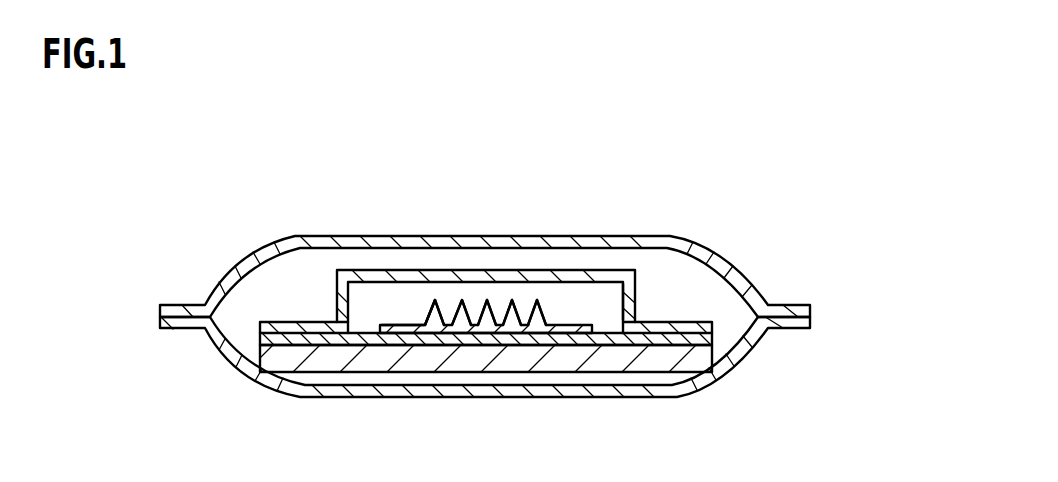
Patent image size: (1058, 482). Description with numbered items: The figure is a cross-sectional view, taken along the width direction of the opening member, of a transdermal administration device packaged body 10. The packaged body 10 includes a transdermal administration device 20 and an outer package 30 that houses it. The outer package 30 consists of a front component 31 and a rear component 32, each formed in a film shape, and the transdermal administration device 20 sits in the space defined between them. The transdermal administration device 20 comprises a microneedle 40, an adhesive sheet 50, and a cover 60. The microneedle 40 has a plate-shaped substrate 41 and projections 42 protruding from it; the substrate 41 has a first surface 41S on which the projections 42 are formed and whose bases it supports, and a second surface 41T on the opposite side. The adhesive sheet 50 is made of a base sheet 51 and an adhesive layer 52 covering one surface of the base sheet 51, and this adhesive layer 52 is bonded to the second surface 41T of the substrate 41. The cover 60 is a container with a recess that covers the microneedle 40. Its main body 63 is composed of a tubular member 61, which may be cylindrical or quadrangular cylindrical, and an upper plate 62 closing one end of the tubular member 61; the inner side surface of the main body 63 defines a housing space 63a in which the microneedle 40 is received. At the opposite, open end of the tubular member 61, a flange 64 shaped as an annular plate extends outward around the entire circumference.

The transdermal administration device packaged body 10 is at (207, 169).
The transdermal administration device 20 is at (253, 292).
The outer package 30 is at (852, 258).
The front component 31 is at (748, 276).
The rear component 32 is at (748, 356).
The microneedle 40 is at (567, 187).
The substrate 41 is at (568, 323).
The first surface 41S is at (396, 327).
The second surface 41T is at (428, 328).
The projection 42 is at (520, 298).
The adhesive sheet 50 is at (140, 350).
The base sheet 51 is at (260, 362).
The adhesive layer 52 is at (260, 340).
The cover 60 is at (390, 142).
The tubular member 61 is at (337, 270).
The upper plate 62 is at (352, 283).
The main body 63 is at (402, 185).
The housing space 63a is at (623, 300).
The flange 64 is at (288, 322).